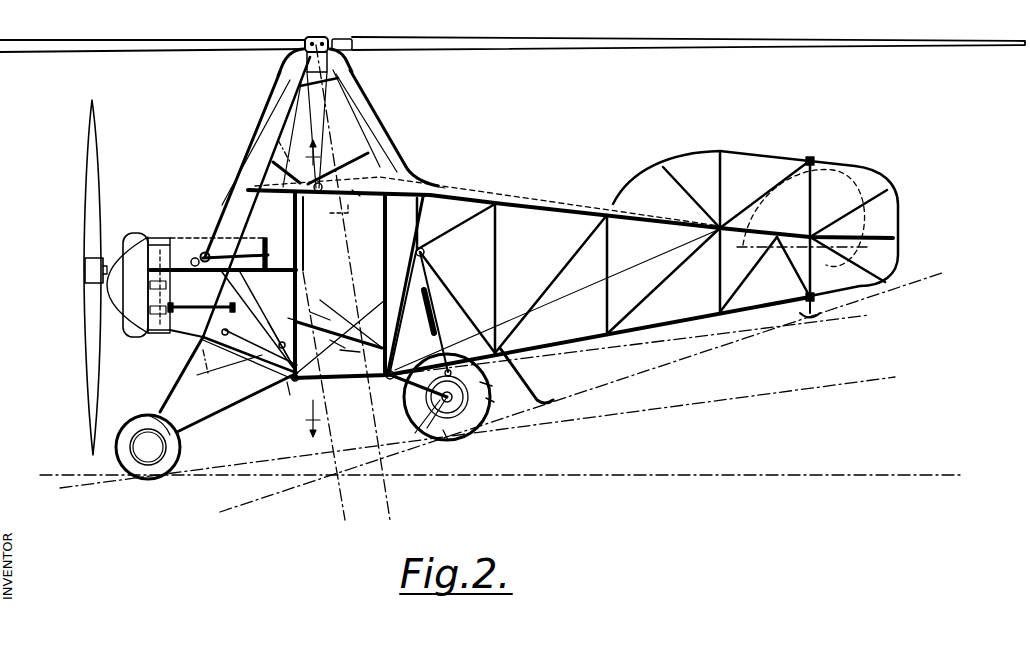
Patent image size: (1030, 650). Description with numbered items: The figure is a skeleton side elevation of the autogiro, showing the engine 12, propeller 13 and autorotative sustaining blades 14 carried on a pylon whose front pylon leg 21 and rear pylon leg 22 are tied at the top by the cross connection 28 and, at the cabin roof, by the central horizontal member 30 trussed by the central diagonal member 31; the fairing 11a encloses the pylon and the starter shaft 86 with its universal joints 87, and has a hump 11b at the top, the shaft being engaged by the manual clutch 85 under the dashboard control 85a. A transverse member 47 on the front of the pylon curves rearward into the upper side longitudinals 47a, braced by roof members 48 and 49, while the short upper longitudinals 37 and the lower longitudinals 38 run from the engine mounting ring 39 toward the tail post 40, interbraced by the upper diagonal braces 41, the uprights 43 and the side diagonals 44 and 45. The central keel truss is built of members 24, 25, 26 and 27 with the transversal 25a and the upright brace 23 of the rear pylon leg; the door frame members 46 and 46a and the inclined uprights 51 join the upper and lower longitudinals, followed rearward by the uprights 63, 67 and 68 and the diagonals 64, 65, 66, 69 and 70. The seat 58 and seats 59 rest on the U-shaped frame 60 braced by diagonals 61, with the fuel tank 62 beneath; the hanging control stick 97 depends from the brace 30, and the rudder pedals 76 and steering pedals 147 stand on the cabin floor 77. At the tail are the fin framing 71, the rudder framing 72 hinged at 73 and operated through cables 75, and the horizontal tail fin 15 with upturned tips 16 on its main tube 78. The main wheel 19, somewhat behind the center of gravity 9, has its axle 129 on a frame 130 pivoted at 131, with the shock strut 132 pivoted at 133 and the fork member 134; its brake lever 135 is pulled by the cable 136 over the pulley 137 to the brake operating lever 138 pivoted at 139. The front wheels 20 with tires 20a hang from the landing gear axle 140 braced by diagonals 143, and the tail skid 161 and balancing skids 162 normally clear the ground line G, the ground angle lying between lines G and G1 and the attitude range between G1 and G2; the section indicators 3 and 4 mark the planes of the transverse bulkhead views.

The autorotative sustaining blades 14 is at (76, 42).
The fairing 11a is at (272, 109).
The hump 11b is at (286, 66).
The cross connection 28 is at (340, 84).
The shaft 86 is at (262, 146).
The rear pylon leg 22 is at (385, 158).
The cabin roof member 49 is at (410, 168).
The central diagonal member 31 is at (340, 166).
The section line 3- 3 is at (318, 283).
The section line 4- 4 is at (248, 266).
The transverse member 47 is at (246, 190).
The upper side longitudinals 47a is at (556, 186).
The central horizontal member 30 is at (352, 193).
The cabin roof member 48 is at (373, 284).
The upright side member 51 is at (420, 207).
The front pylon leg 21 is at (252, 220).
The clutch control 85a is at (270, 252).
The short upper longitudinal members 37 is at (282, 266).
The manual clutch 85 is at (193, 258).
The universal joints 87 is at (206, 252).
The engine 12 is at (134, 236).
The propeller 13 is at (83, 182).
The upper diagonal braces 41 is at (235, 250).
The hanging control stick 97 is at (304, 240).
The control axis 9 is at (306, 270).
The occupant's seat 58 is at (414, 248).
The shock strut pivot 133 is at (421, 256).
The diagonal 64 is at (464, 224).
The side upright 63 is at (497, 254).
The diagonal 65 is at (452, 290).
The upright 67 is at (609, 242).
The diagonal 69 is at (567, 265).
The diagonal 70 is at (658, 288).
The cables 75 is at (578, 288).
The upturned tips 16 is at (838, 168).
The vertical fin framing 71 is at (735, 185).
The rudder hinge 73 is at (813, 160).
The rudder framing 72 is at (884, 205).
The main tube 78 is at (757, 262).
The upright 68 is at (719, 270).
The tail post 40 is at (800, 273).
The horizontal tail fin 15 is at (830, 269).
The side diagonal brace 45 is at (150, 288).
The engine mounting ring 39 is at (150, 313).
The uprights 43 is at (201, 302).
The foot pedals 147 is at (233, 284).
The side diagonal brace 44 is at (254, 296).
The side door frame member 46 is at (285, 312).
The door frame member 46a is at (386, 292).
The U-shaped frame 60 is at (325, 326).
The diagonal members 61 is at (360, 316).
The seats 59 is at (352, 330).
The foot pedals 76 is at (223, 323).
The truss members 24 is at (254, 337).
The brake operating lever 138 is at (281, 344).
The vertical member 25 is at (285, 344).
The lower longitudinals 38 is at (183, 338).
The lower truss member 27 is at (240, 356).
The main fuel tank 62 is at (336, 349).
The upper truss member 26 is at (348, 352).
The central upright brace 23 is at (396, 326).
The shock strut 132 is at (430, 316).
The diagonals 66 is at (447, 365).
The cabin floor 77 is at (248, 370).
The brake lever pivot 139 is at (284, 376).
The pulley 137 is at (388, 378).
The frame pivot 131 is at (400, 392).
The transversal 25a is at (294, 390).
The brake cable 136 is at (297, 392).
The wheel frame 130 is at (418, 420).
The fork member 134 is at (485, 385).
The wheel brake lever 135 is at (489, 400).
The balancing skids 162 is at (540, 385).
The main wheel 19 is at (470, 426).
The axle 129 is at (445, 440).
The supplemental wheels 20 is at (148, 476).
The tires 20a is at (146, 412).
The main landing gear member 140 is at (170, 398).
The diagonals 143 is at (215, 418).
The tail skid 161 is at (818, 316).
The ground line G is at (504, 467).
The ground line at rest G1 is at (490, 432).
The attitude limit line G2 is at (222, 514).